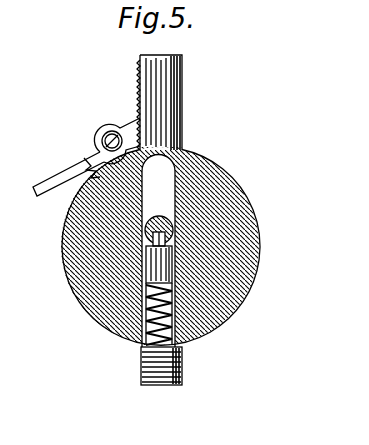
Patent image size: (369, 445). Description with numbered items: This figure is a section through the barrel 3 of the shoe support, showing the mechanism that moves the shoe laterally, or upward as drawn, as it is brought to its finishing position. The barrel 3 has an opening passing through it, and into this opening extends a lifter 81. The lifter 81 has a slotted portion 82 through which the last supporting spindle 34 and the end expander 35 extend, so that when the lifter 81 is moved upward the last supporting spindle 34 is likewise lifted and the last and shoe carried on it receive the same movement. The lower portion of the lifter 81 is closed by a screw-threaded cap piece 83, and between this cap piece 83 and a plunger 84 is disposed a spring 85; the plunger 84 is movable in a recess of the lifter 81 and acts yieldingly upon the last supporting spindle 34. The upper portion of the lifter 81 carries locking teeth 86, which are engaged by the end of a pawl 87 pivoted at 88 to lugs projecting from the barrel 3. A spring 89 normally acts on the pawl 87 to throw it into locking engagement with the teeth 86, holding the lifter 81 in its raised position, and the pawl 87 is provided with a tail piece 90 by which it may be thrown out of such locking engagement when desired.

The barrel 3 is at (230, 175).
The lifter 81 is at (182, 84).
The slotted portion 82 is at (170, 182).
The screw-threaded cap piece 83 is at (178, 380).
The plunger 84 is at (176, 265).
The spring 85 is at (177, 340).
The locking teeth 86 is at (140, 86).
The pawl 87 is at (130, 122).
The pivot 88 is at (104, 136).
The spring 89 is at (62, 193).
The tail piece 90 is at (70, 166).
The last supporting spindle 34 is at (172, 219).
The end expander 35 is at (172, 234).